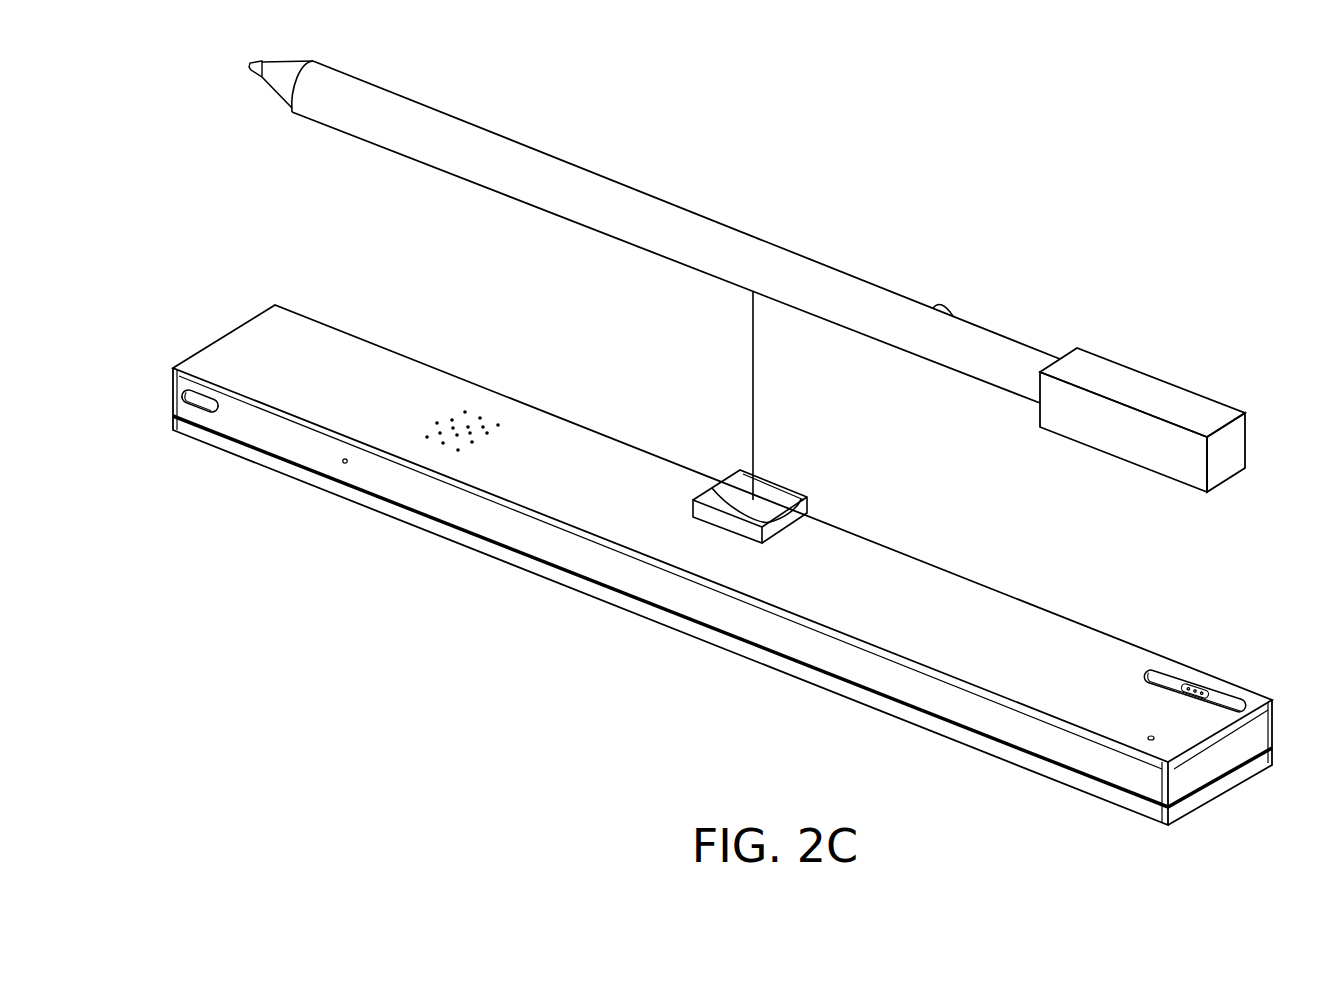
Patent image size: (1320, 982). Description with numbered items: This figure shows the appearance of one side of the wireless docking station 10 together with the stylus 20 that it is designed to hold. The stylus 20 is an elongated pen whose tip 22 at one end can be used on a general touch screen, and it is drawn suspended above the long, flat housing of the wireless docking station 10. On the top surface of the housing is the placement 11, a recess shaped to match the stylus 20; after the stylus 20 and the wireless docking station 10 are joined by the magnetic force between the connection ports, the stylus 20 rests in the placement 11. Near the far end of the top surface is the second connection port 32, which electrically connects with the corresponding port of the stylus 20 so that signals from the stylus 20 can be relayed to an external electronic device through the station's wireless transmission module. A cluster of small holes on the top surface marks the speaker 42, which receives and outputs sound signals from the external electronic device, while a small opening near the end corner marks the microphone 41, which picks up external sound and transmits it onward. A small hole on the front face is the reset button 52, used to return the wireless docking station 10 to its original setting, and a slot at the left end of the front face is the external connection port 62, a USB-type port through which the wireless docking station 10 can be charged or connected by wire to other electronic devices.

The wireless docking station 10 is at (204, 272).
The stylus 20 is at (767, 180).
The tip 22 is at (252, 75).
The placement 11 is at (791, 488).
The speaker 42 is at (458, 403).
The reset button 52 is at (346, 464).
The external connection port 62 is at (198, 410).
The second connection port 32 is at (1192, 682).
The microphone 41 is at (1154, 742).